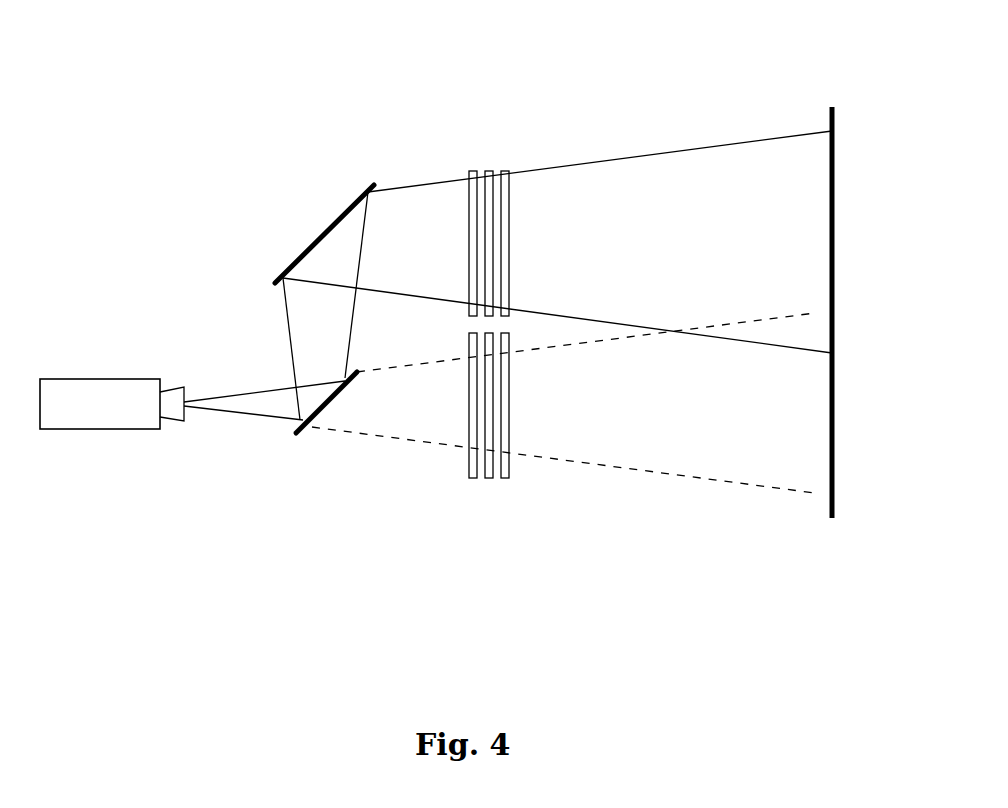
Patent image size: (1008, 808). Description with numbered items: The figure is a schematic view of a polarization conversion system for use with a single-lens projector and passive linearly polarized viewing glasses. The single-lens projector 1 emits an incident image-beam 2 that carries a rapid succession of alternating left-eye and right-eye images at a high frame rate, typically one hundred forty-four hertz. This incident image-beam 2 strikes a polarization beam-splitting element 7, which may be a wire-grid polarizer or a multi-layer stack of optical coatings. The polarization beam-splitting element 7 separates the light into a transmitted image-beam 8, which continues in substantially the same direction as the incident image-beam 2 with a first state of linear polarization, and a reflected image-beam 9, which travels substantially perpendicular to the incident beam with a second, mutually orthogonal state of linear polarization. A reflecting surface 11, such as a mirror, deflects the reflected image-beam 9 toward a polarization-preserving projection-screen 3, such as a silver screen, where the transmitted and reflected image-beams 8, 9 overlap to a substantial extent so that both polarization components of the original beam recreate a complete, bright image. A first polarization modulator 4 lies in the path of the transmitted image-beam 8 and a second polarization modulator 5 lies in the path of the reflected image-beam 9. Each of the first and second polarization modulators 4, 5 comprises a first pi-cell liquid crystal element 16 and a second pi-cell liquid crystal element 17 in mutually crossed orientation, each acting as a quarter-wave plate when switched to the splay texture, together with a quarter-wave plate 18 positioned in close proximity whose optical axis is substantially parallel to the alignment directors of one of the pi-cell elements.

The single-lens projector 1 is at (78, 374).
The incident image-beam 2 is at (235, 392).
The polarization-preserving projection-screen 3 is at (843, 108).
The first polarization modulator 4 is at (563, 560).
The second polarization modulator 5 is at (487, 179).
The polarization beam-splitting element 7 is at (300, 439).
The transmitted image-beam 8 is at (392, 444).
The reflected image-beam 9 is at (357, 335).
The reflecting surface 11 is at (281, 269).
The first pi-cell liquid crystal element 16 is at (467, 164).
The second pi-cell liquid crystal element 17 is at (488, 167).
The quarter-wave plate 18 is at (536, 208).